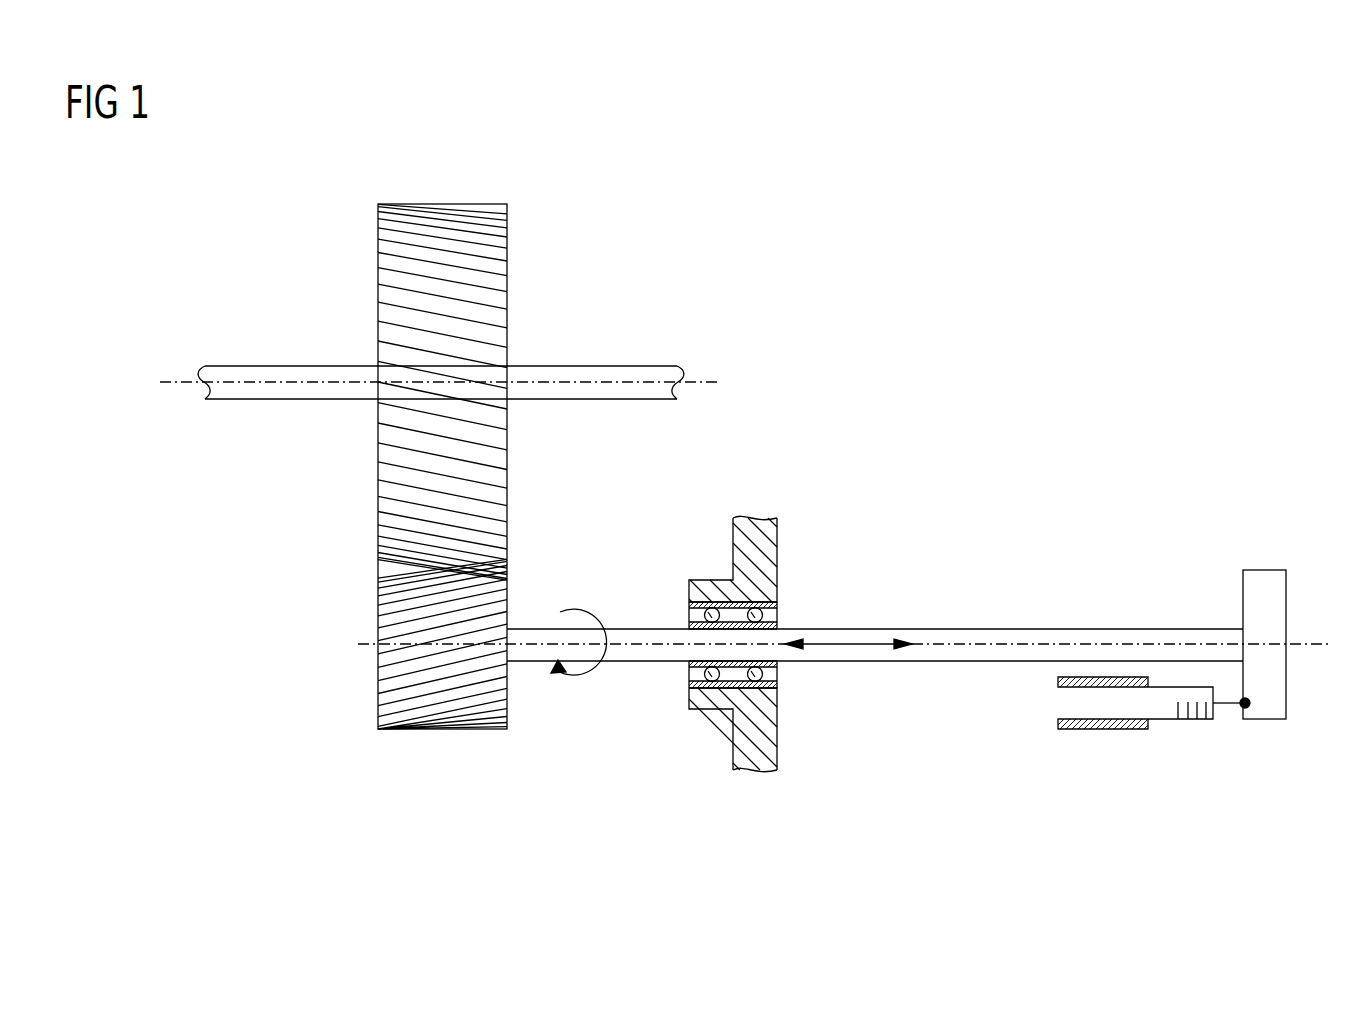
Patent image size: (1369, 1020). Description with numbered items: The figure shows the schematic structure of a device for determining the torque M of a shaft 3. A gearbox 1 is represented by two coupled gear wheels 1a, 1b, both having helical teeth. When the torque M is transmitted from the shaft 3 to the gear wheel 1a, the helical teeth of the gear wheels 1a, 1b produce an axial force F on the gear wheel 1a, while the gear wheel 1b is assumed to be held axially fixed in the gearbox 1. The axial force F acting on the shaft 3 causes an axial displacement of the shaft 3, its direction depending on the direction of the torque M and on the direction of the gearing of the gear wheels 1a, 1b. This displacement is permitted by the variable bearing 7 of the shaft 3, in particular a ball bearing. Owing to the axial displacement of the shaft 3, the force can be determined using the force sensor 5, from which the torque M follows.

The gearbox 1 is at (469, 463).
The gear wheel 1a is at (440, 713).
The gear wheel 1b is at (437, 204).
The shaft 3 is at (215, 390).
The force sensor 5 is at (1088, 737).
The variable bearing 7 is at (725, 600).
The axial force F is at (848, 647).
The torque M is at (579, 624).